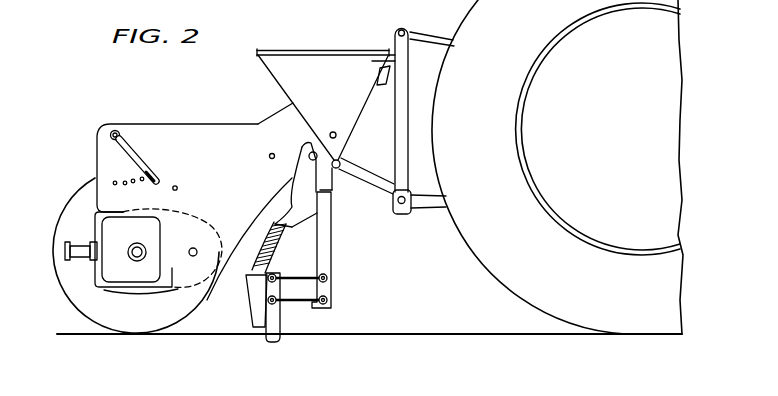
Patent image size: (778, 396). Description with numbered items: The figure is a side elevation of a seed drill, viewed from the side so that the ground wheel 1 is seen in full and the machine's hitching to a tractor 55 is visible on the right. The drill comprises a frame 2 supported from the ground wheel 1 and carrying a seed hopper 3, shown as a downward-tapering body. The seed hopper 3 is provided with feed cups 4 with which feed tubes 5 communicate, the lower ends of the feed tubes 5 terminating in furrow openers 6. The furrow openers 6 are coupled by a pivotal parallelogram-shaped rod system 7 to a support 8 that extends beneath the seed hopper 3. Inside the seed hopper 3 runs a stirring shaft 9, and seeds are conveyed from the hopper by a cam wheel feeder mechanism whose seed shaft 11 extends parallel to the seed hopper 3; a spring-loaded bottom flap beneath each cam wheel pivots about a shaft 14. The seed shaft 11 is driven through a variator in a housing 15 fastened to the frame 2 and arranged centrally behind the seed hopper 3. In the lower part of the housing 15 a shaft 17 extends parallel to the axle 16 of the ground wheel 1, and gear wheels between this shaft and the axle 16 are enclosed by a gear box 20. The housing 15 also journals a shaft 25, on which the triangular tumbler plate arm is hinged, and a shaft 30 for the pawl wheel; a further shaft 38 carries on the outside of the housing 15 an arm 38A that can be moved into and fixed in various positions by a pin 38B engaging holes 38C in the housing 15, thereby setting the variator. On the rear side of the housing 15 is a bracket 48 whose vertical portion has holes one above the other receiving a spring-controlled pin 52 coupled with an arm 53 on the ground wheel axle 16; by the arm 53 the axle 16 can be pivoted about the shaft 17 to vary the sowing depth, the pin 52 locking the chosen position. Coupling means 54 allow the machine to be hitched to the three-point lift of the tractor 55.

The ground wheel 1 is at (83, 313).
The frame 2 is at (378, 170).
The seed hopper 3 is at (295, 55).
The feed cup 4 is at (284, 227).
The feed tube 5 is at (267, 255).
The furrow opener 6 is at (252, 311).
The parallelogram-shaped rod system 7 is at (290, 296).
The support 8 is at (332, 259).
The stirring shaft 9 is at (336, 132).
The seed shaft 11 is at (308, 152).
The shaft 14 is at (340, 172).
The housing 15 is at (239, 124).
The axle of the ground wheels 16 is at (135, 246).
The shaft 17 is at (192, 248).
The gear box 20 is at (150, 290).
The shaft 25 is at (178, 189).
The shaft 30 is at (270, 159).
The shaft 38 is at (116, 130).
The arm 38A is at (133, 147).
The pin 38B is at (157, 176).
The holes 38C is at (112, 181).
The bracket 48 is at (105, 288).
The spring-controlled pin 52 is at (65, 258).
The arm 53 is at (89, 245).
The coupling means 54 is at (410, 99).
The tractor 55 is at (522, 297).